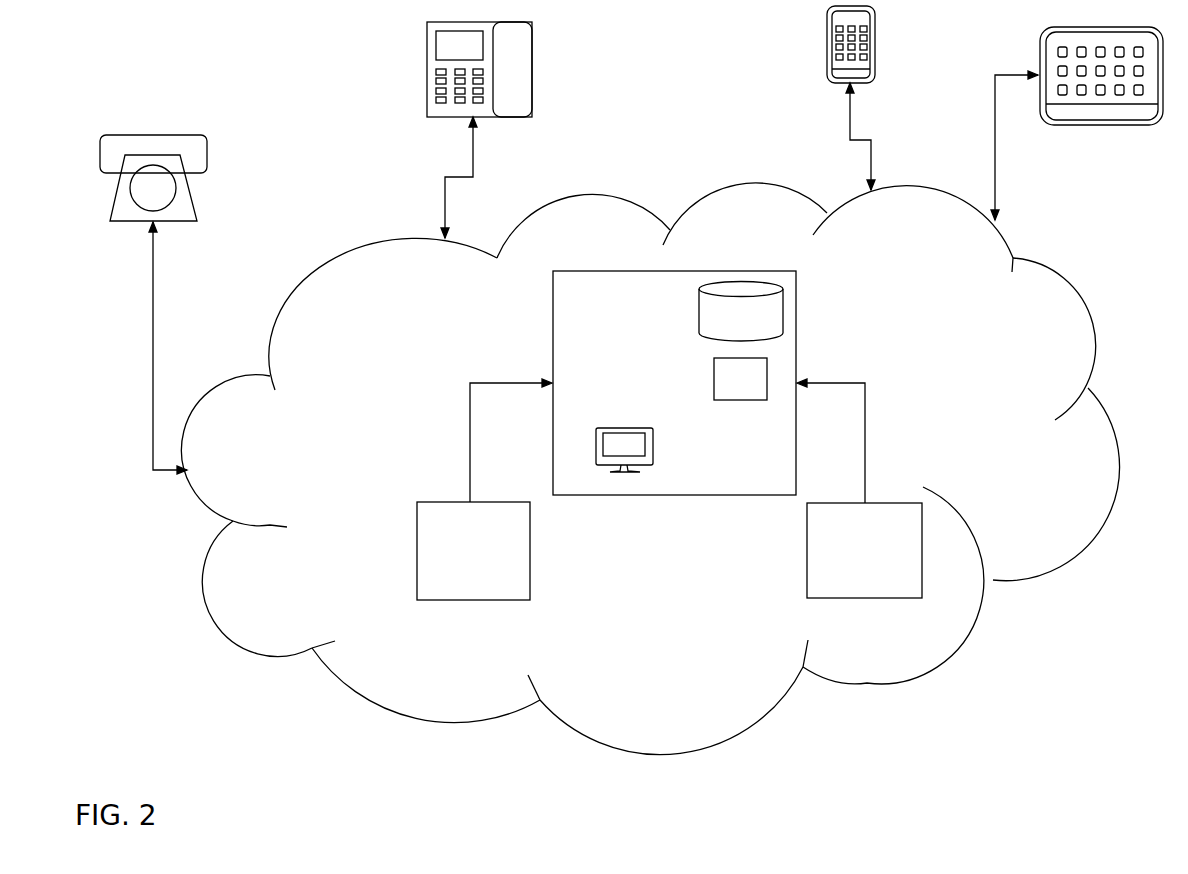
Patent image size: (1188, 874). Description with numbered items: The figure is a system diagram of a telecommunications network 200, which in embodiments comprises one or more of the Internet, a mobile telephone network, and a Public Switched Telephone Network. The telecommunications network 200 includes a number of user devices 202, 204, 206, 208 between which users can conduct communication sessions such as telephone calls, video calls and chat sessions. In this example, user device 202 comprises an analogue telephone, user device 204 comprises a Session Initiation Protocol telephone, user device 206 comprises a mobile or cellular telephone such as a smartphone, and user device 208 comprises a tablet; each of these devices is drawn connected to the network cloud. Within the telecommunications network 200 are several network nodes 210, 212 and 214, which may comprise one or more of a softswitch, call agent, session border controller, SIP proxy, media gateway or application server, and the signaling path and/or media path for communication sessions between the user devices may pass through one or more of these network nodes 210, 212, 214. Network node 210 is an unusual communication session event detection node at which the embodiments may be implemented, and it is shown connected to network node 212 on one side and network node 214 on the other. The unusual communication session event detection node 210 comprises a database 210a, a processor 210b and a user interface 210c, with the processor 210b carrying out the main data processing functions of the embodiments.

The telecommunications network 200 is at (604, 208).
The user device 202 is at (207, 148).
The user device 204 is at (532, 50).
The user device 206 is at (828, 47).
The user device 208 is at (1082, 112).
The unusual communication session event detection node 210 is at (677, 396).
The database 210a is at (719, 326).
The processor 210b is at (719, 390).
The user interface 210c is at (645, 450).
The network node 212 is at (515, 571).
The network node 214 is at (906, 571).